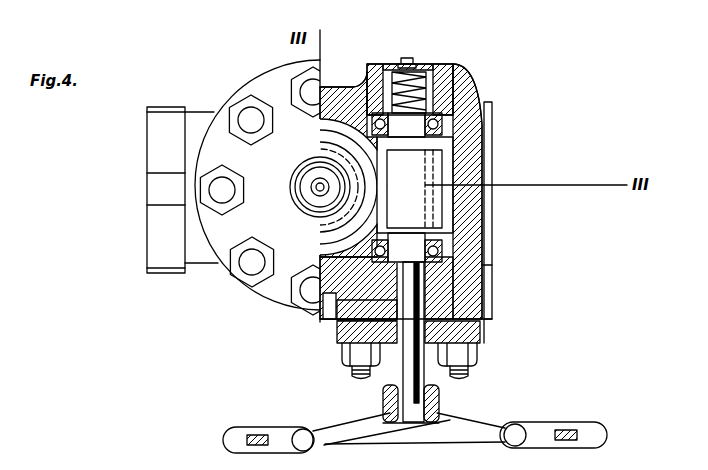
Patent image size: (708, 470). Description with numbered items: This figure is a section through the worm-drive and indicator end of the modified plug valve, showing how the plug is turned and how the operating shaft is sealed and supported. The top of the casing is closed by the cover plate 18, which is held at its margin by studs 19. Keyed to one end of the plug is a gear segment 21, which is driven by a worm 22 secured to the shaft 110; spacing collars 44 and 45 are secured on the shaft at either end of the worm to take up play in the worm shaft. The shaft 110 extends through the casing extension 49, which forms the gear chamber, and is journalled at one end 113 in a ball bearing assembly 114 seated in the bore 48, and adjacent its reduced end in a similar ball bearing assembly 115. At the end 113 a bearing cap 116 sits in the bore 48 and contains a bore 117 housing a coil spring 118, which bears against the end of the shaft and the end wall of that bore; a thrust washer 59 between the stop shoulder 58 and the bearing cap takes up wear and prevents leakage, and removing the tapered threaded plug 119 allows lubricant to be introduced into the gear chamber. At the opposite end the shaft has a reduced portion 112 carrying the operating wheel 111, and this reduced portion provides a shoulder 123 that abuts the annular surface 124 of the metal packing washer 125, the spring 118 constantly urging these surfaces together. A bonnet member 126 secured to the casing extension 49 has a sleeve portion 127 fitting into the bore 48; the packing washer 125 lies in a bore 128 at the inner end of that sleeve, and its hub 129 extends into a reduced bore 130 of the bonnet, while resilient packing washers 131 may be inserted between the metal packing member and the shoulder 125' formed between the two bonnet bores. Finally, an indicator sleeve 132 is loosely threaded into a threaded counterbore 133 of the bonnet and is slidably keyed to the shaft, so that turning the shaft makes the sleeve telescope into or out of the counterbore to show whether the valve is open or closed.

The cover plate 18 is at (281, 165).
The studs 19 is at (243, 105).
The gear segment 21 is at (322, 246).
The worm 22 is at (483, 170).
The spacing collar 44 is at (483, 150).
The spacing collar 45 is at (483, 204).
The bore 48 is at (483, 131).
The casing extension 49 is at (486, 301).
The stop shoulder 58 is at (383, 102).
The thrust washer 59 is at (372, 118).
The shaft 110 is at (496, 162).
The operating wheel 111 is at (594, 433).
The reduced portion 112 is at (490, 321).
The shaft end 113 is at (472, 82).
The ball bearing assembly 114 is at (490, 110).
The ball bearing assembly 115 is at (483, 222).
The bearing cap 116 is at (478, 108).
The bore 117 is at (455, 80).
The coil spring 118 is at (425, 95).
The tapered threaded plug 119 is at (408, 58).
The shoulder 123 is at (483, 243).
The annular surface 124 is at (483, 263).
The metal packing washer 125 is at (272, 293).
The shoulder 125' is at (311, 345).
The bonnet member 126 is at (490, 340).
The sleeve portion 127 is at (483, 311).
The bore 128 is at (494, 267).
The hub 129 is at (342, 332).
The reduced bore 130 is at (342, 340).
The packing washers 131 is at (488, 289).
The indicator sleeve 132 is at (381, 372).
The threaded counterbore 133 is at (445, 362).